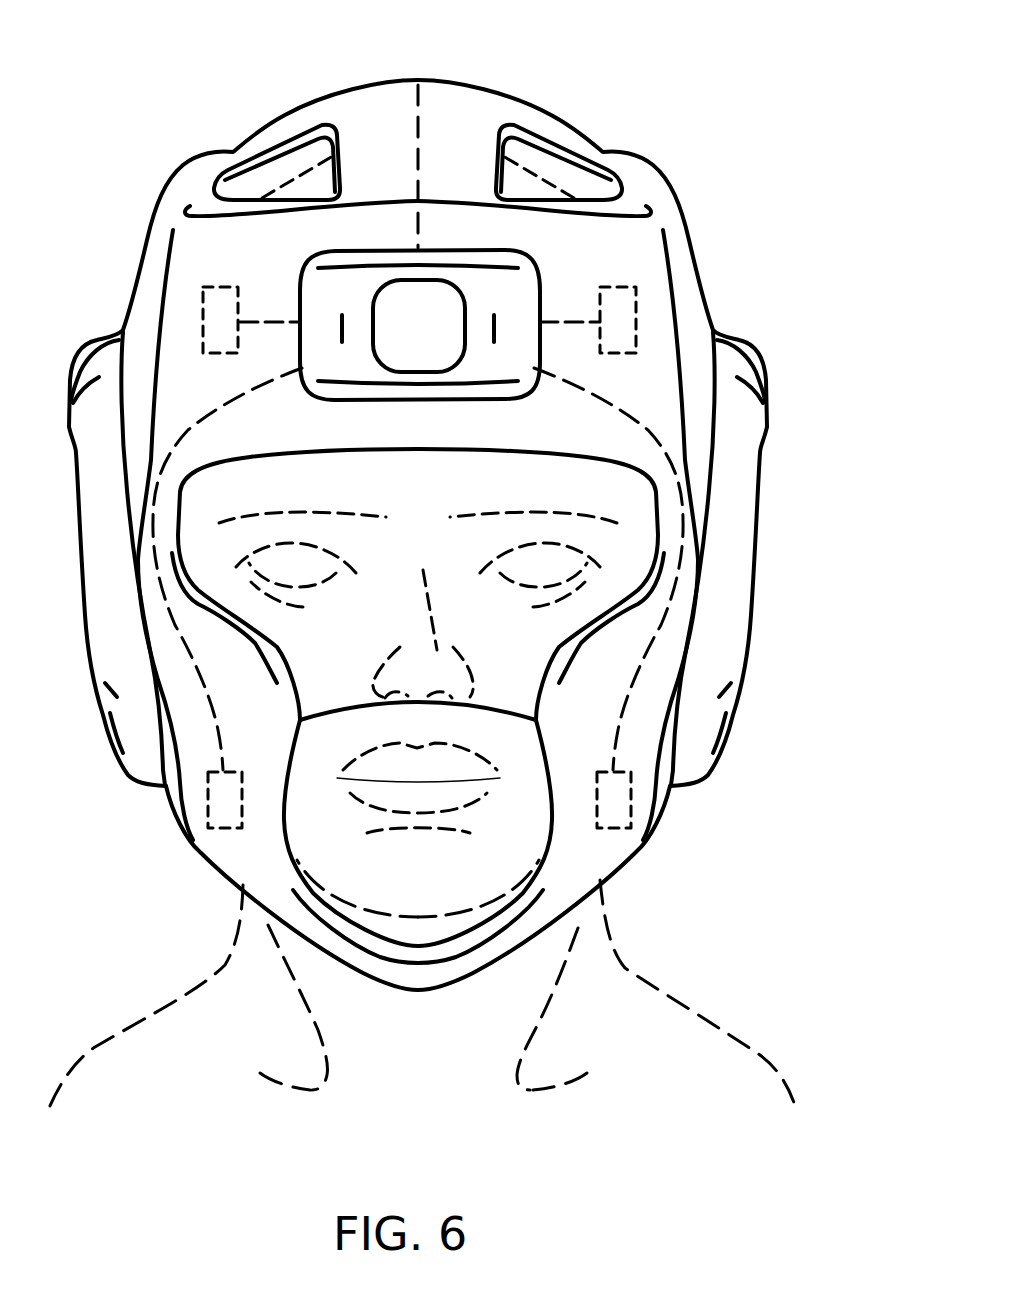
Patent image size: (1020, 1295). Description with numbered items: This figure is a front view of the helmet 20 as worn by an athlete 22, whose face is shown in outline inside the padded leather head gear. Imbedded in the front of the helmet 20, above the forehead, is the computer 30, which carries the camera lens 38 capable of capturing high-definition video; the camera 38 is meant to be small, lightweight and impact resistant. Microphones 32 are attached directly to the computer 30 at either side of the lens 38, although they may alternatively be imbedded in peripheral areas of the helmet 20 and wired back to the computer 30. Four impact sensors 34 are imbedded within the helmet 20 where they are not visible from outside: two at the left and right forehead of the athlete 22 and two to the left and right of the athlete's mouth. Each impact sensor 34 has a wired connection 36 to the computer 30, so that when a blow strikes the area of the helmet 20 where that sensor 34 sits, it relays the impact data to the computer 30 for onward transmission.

The helmet 20 is at (467, 113).
The athlete 22 is at (513, 638).
The computer 30 is at (360, 263).
The microphones 32 is at (300, 323).
The impact sensors 34 is at (203, 322).
The wired connection 36 is at (420, 120).
The camera lens 38 is at (443, 353).